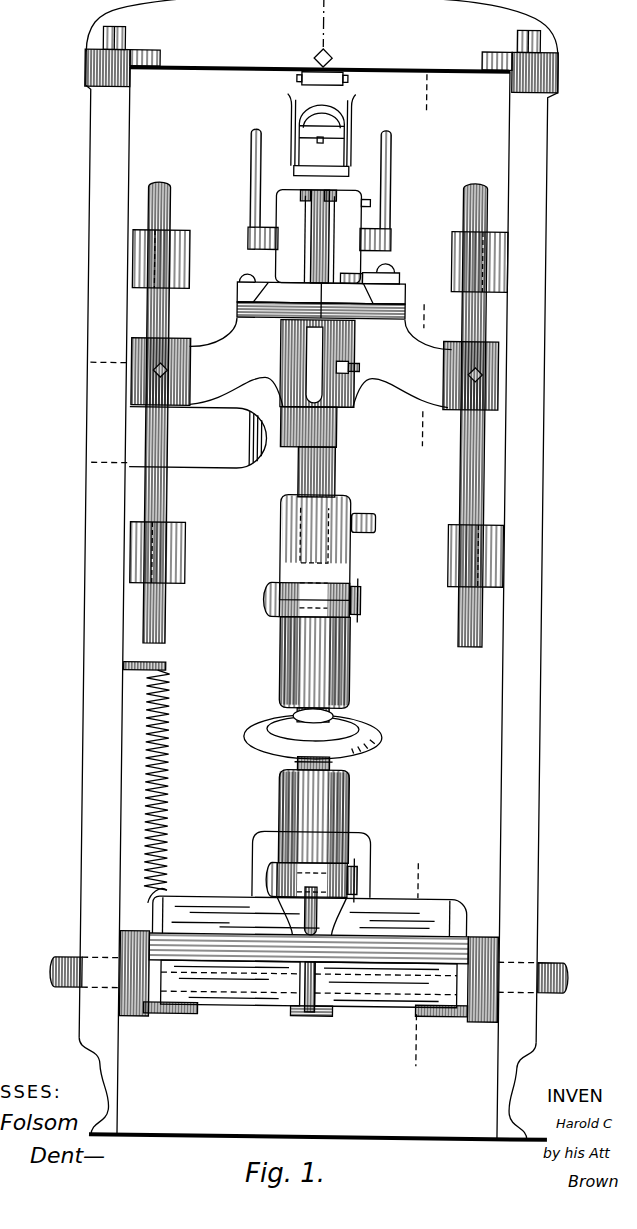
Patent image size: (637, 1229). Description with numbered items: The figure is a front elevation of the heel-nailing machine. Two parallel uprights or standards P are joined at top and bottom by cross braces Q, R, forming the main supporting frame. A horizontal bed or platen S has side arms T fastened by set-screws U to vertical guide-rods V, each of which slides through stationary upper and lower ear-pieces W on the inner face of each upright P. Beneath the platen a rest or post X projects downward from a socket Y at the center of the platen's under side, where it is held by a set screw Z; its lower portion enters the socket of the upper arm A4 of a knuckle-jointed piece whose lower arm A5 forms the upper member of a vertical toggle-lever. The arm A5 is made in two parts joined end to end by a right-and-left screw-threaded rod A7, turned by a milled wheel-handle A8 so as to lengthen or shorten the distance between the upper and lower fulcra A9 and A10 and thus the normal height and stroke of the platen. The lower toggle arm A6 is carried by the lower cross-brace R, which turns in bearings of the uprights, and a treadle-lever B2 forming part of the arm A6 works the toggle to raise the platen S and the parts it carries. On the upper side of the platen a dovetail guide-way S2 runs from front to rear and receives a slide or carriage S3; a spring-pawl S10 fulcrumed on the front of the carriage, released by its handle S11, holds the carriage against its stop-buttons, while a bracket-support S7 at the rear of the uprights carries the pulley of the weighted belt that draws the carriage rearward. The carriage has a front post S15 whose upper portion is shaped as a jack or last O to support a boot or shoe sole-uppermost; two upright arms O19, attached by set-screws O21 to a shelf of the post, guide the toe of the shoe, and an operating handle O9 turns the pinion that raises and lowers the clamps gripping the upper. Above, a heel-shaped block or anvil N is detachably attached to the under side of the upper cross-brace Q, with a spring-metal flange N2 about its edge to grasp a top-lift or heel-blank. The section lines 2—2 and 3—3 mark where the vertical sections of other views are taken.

The uprights or standards P is at (317, 570).
The upper cross-brace Q is at (322, 46).
The block or anvil N is at (322, 79).
The flange N2 is at (348, 84).
The jack or last O is at (322, 141).
The upright arms O19 is at (352, 139).
The operating handle O9 is at (252, 197).
The set-screws O21 is at (333, 201).
The front post S15 is at (323, 215).
The spring-pawl S10 is at (403, 280).
The handle S11 is at (351, 278).
The slide or carriage S3 is at (321, 300).
The dovetail guide-way S2 is at (408, 297).
The bed or platen S is at (378, 330).
The bracket-support S7 is at (226, 434).
The side extensions or arms T is at (315, 374).
The set-screws U is at (486, 376).
The set screw Z is at (364, 367).
The section line 3— 3 is at (314, 365).
The socket Y is at (466, 474).
The rest or standard X is at (340, 456).
The guide-rods V is at (186, 482).
The ear-pieces W is at (444, 556).
The upper arm of knuckle-jointed piece A4 is at (357, 545).
The upper fulcrum A9 is at (367, 602).
The upper toggle-lever arm A5 is at (372, 815).
The wheel-handle A8 is at (400, 738).
The screw-threaded rod A7 is at (340, 765).
The lower fulcrum A10 is at (367, 883).
The lower toggle-lever arm A6 is at (473, 1022).
The treadle-lever B2 is at (308, 959).
The lower cross-brace R is at (592, 980).
The section line 2— 2 is at (421, 580).